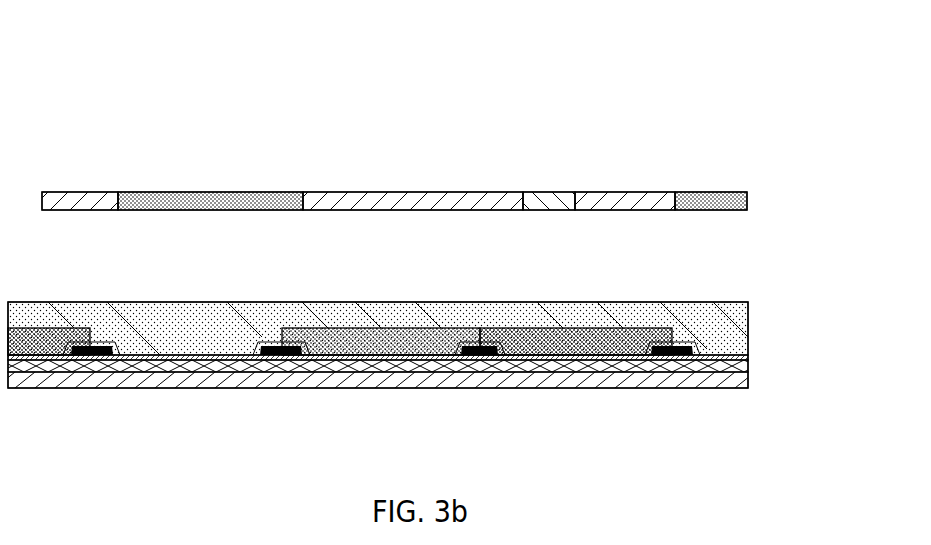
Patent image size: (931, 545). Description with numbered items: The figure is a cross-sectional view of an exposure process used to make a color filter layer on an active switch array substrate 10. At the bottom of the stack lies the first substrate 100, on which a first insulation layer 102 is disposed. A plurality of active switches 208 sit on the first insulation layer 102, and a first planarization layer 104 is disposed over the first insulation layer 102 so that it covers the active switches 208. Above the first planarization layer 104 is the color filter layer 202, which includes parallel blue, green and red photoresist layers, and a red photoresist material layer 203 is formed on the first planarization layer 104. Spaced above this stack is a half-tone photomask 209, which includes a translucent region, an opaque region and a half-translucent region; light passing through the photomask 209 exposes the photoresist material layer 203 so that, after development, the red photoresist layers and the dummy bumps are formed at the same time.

The active switch array substrate 10 is at (653, 401).
The first substrate 100 is at (747, 379).
The first insulation layer 102 is at (745, 367).
The first planarization layer 104 is at (745, 357).
The color filter layer 202 is at (637, 328).
The photoresist material layer 203 is at (733, 312).
The active switches 208 is at (283, 388).
The photomask 209 is at (700, 192).